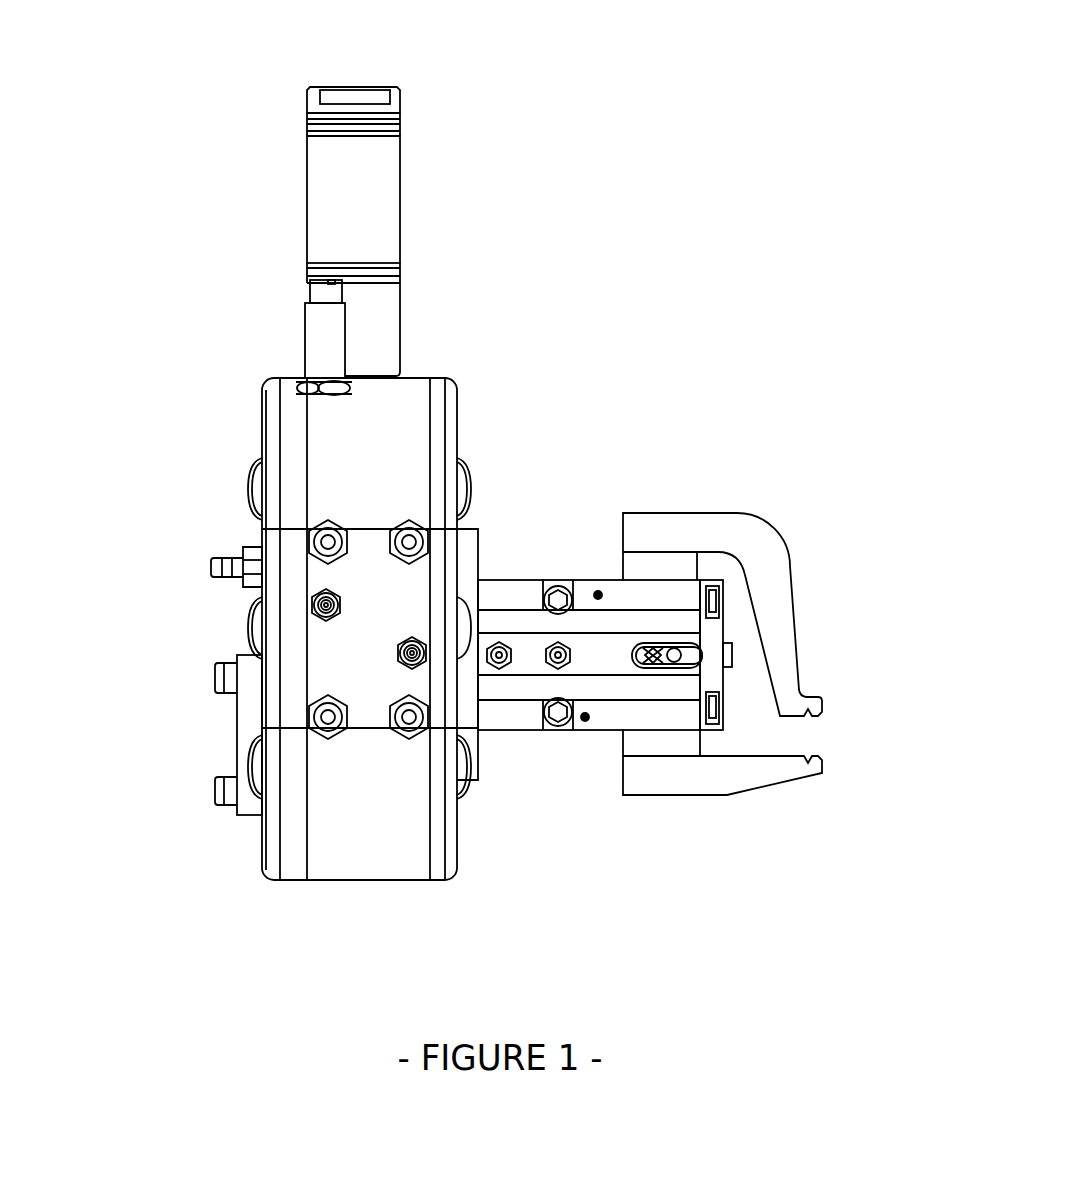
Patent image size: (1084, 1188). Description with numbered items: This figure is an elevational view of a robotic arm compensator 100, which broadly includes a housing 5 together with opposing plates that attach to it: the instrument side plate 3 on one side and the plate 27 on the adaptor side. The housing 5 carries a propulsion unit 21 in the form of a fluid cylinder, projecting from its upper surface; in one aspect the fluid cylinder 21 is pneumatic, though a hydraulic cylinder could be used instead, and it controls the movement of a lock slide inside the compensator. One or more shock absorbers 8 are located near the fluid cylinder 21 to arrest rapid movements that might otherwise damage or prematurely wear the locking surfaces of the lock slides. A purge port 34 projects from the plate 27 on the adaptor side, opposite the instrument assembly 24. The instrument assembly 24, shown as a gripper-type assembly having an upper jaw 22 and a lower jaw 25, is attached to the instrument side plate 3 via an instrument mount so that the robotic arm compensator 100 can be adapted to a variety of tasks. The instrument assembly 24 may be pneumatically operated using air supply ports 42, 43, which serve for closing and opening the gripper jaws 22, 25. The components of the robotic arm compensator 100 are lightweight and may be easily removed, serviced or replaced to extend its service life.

The robotic arm compensator 100 is at (782, 126).
The propulsion unit 21 is at (371, 178).
The shock absorber 8 is at (323, 342).
The instrument side plate 3 is at (452, 410).
The housing 5 is at (322, 462).
The purge port 34 is at (248, 560).
The plate 27 is at (272, 864).
The instrument assembly 24 is at (572, 565).
The upper jaw 22 is at (755, 545).
The lower jaw 25 is at (742, 780).
The air supply port 42 is at (508, 660).
The air supply port 43 is at (566, 660).